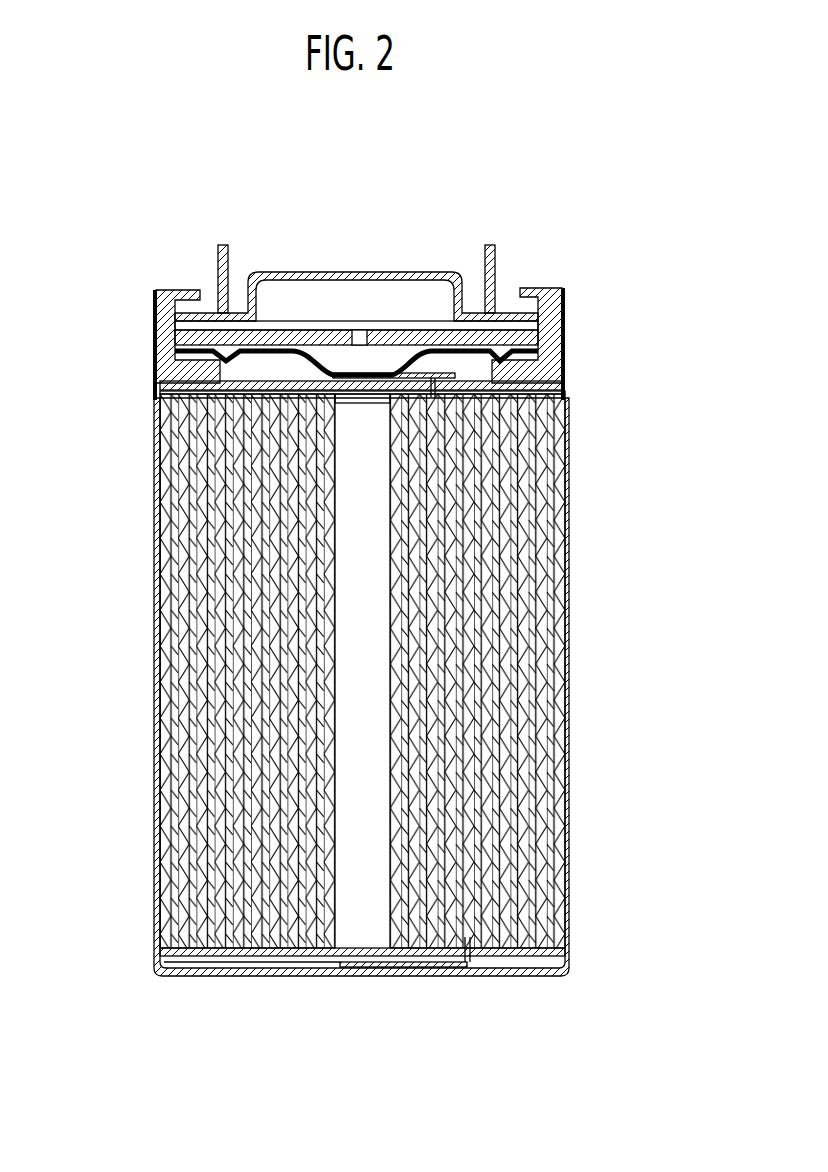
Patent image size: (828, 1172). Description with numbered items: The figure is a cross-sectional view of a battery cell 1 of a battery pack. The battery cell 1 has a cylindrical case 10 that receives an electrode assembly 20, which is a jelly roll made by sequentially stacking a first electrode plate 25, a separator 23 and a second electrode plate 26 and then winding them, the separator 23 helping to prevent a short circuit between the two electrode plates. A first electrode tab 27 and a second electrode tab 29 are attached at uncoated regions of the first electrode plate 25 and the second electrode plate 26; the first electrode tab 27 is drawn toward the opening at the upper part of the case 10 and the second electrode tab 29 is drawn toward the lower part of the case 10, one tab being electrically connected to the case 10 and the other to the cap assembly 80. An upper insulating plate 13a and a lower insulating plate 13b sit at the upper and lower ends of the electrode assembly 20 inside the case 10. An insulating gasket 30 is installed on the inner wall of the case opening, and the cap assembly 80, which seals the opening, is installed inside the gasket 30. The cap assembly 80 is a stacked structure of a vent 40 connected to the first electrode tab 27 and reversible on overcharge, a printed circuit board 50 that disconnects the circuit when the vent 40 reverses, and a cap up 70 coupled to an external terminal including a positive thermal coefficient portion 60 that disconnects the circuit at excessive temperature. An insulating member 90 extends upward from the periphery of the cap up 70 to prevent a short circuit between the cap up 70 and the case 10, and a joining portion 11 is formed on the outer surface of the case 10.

The battery cell 1 is at (607, 162).
The case 10 is at (154, 487).
The joining portion 11 is at (160, 340).
The upper insulating plate 13a is at (164, 384).
The lower insulating plate 13b is at (228, 956).
The electrode assembly 20 is at (630, 367).
The separator 23 is at (540, 459).
The first electrode plate 25 is at (537, 494).
The second electrode plate 26 is at (565, 412).
The first electrode tab 27 is at (560, 386).
The second electrode tab 29 is at (443, 977).
The insulating gasket 30 is at (553, 307).
The vent 40 is at (300, 370).
The printed circuit board 50 is at (405, 340).
The positive thermal coefficient portion 60 is at (482, 328).
The cap up 70 is at (337, 272).
The cap assembly 80 is at (478, 179).
The insulating member 90 is at (222, 243).